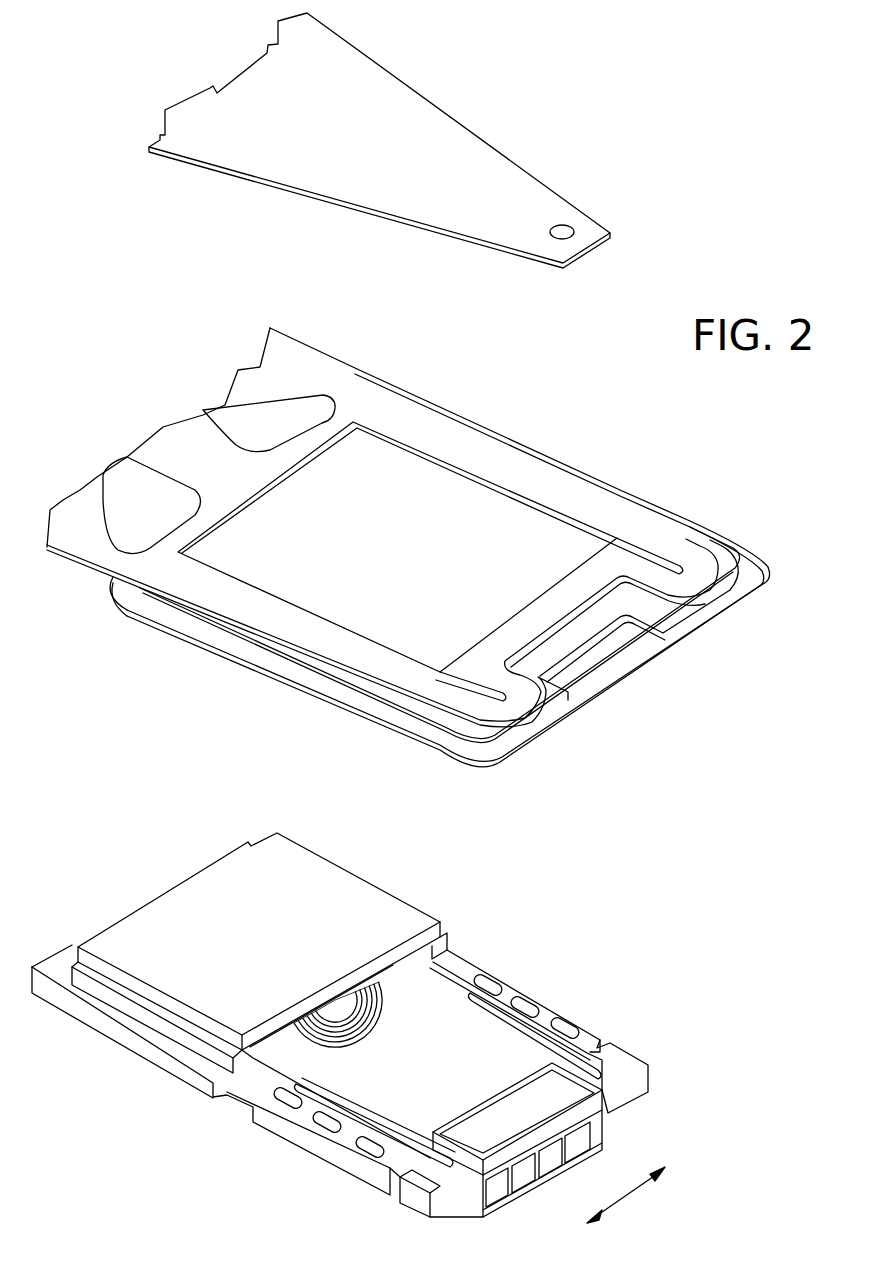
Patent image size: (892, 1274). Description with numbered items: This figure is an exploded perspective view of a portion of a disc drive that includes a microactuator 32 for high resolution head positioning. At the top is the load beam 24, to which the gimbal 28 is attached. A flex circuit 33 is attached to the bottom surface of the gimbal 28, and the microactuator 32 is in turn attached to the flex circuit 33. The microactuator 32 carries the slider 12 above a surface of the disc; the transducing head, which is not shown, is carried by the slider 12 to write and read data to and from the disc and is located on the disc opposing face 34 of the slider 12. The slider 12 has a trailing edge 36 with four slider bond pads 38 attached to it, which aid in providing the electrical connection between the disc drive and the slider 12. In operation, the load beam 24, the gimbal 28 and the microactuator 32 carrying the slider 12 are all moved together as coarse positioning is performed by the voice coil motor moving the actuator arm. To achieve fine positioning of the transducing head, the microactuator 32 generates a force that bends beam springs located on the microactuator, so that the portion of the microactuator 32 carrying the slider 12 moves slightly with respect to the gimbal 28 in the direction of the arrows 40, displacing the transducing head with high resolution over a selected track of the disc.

The load beam 24 is at (452, 133).
The gimbal 28 is at (605, 515).
The flex circuit 33 is at (677, 523).
The microactuator 32 is at (125, 863).
The slider 12 is at (560, 1102).
The trailing edge 36 is at (546, 1145).
The slider bond pads 38 is at (548, 1160).
The disc opposing face 34 is at (517, 1200).
The arrows 40 is at (625, 1200).